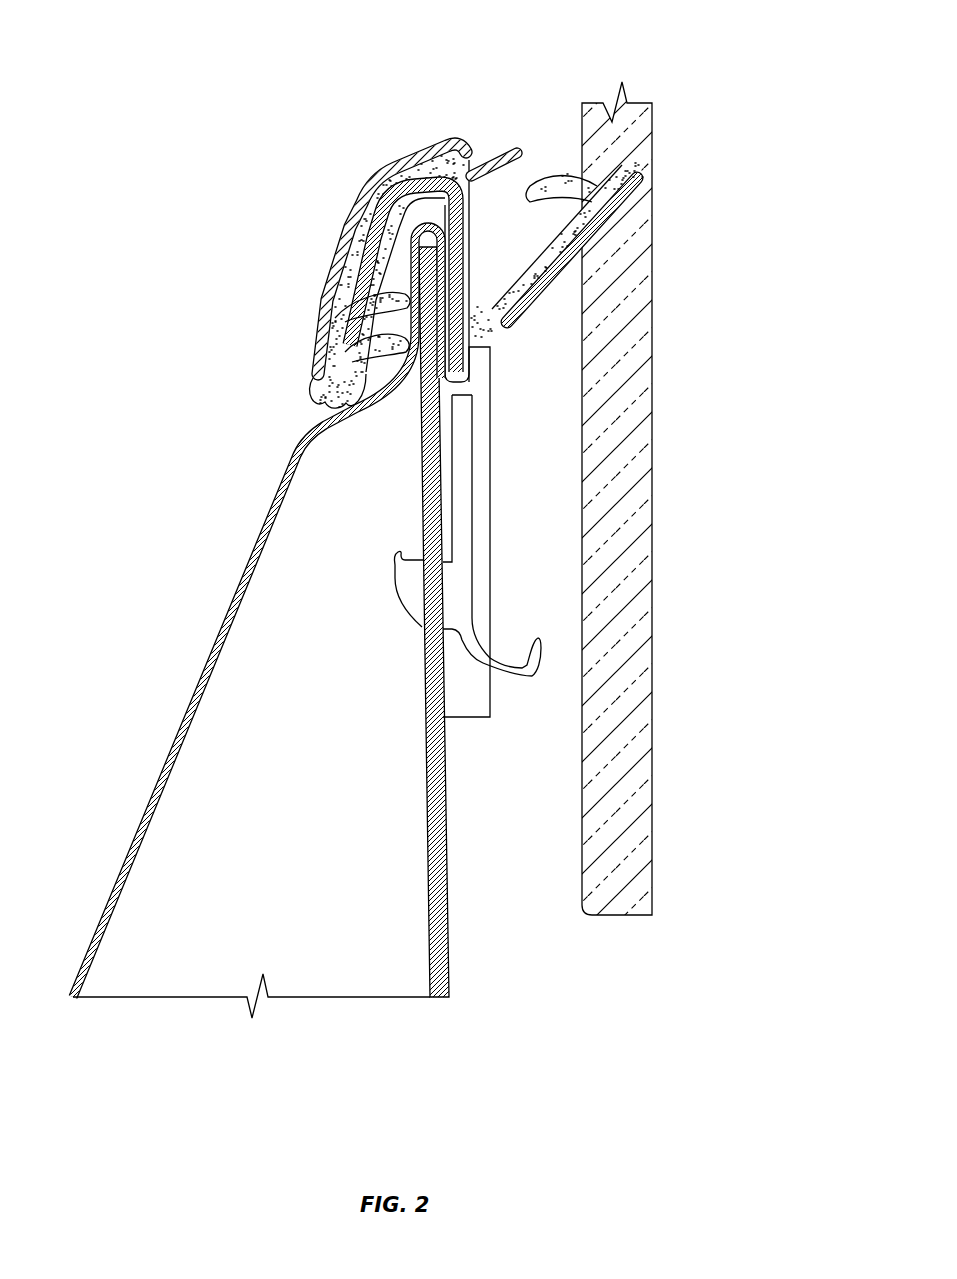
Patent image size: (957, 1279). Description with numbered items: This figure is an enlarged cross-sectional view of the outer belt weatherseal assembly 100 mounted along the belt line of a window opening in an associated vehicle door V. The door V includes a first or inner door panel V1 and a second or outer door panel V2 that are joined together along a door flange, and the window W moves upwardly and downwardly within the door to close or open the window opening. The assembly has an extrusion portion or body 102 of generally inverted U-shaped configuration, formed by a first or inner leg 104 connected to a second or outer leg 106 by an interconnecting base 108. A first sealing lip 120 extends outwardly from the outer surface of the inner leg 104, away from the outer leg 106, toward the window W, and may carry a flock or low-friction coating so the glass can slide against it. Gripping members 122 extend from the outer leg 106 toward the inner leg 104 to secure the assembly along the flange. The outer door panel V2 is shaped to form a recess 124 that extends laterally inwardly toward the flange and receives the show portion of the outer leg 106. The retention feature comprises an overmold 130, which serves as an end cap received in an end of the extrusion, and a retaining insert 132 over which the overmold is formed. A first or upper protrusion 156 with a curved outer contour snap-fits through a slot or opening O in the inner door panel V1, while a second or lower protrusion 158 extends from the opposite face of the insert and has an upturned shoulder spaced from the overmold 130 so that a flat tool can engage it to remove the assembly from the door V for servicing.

The weatherseal assembly 100 is at (698, 48).
The extrusion portion or body 102 is at (326, 288).
The first or inner leg 104 is at (472, 237).
The second or outer leg 106 is at (311, 393).
The interconnecting base 108 is at (413, 158).
The first sealing lip 120 is at (513, 320).
The gripping member 122 is at (372, 343).
The recess 124 is at (298, 450).
The overmold 130 is at (511, 577).
The retaining insert 132 is at (533, 678).
The first or upper protrusion 156 is at (397, 582).
The second or lower protrusion 158 is at (520, 688).
The window W is at (637, 307).
The vehicle door V is at (230, 607).
The first or inner door panel V1 is at (432, 856).
The second or outer door panel V2 is at (102, 908).
The slot or opening O is at (427, 630).